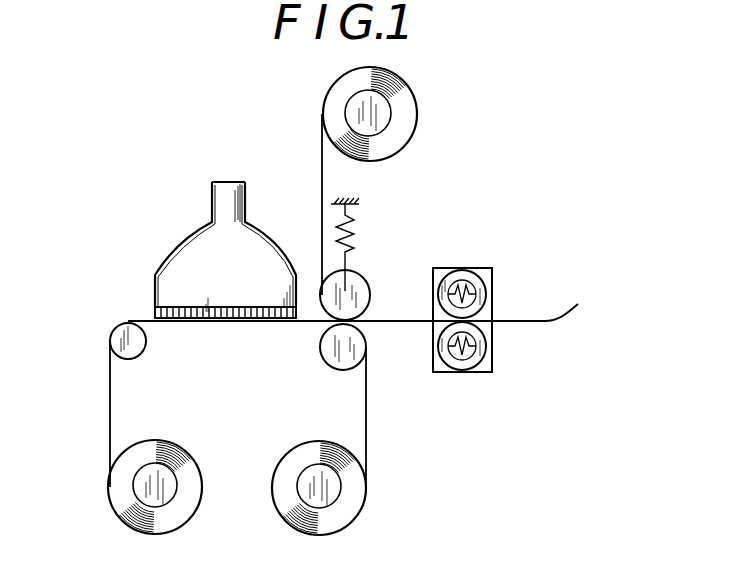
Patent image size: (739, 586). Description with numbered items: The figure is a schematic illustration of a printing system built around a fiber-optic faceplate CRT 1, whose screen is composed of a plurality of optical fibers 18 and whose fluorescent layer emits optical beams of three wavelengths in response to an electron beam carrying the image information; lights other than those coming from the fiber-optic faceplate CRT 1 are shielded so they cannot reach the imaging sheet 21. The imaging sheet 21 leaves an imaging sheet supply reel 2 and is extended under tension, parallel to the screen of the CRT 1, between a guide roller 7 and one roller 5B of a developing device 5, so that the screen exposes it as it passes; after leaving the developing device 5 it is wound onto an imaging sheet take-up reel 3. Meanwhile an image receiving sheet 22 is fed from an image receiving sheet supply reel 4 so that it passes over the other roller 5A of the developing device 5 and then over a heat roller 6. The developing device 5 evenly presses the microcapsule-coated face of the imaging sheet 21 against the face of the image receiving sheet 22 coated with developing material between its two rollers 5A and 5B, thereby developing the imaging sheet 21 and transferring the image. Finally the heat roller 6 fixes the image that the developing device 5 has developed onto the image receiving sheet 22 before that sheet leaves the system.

The fiber-optic faceplate CRT 1 is at (162, 264).
The optical fibers 18 is at (155, 311).
The guide roller 7 is at (113, 343).
The imaging sheet 21 is at (109, 420).
The imaging sheet supply reel 2 is at (135, 483).
The imaging sheet take-up reel 3 is at (333, 494).
The image receiving sheet 22 is at (322, 158).
The image receiving sheet supply reel 4 is at (372, 118).
The developing device 5 is at (357, 269).
The roller 5A is at (355, 296).
The roller 5B is at (325, 352).
The heat roller 6 is at (466, 372).